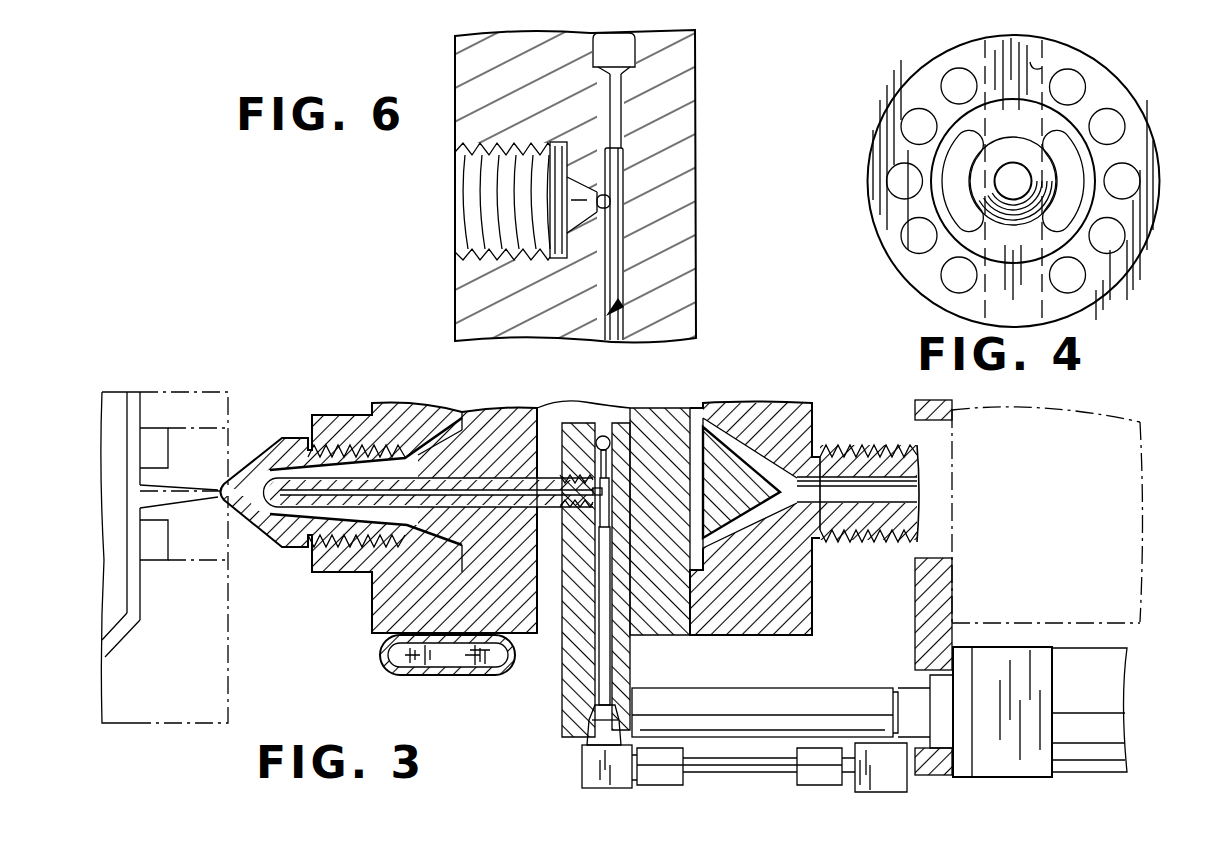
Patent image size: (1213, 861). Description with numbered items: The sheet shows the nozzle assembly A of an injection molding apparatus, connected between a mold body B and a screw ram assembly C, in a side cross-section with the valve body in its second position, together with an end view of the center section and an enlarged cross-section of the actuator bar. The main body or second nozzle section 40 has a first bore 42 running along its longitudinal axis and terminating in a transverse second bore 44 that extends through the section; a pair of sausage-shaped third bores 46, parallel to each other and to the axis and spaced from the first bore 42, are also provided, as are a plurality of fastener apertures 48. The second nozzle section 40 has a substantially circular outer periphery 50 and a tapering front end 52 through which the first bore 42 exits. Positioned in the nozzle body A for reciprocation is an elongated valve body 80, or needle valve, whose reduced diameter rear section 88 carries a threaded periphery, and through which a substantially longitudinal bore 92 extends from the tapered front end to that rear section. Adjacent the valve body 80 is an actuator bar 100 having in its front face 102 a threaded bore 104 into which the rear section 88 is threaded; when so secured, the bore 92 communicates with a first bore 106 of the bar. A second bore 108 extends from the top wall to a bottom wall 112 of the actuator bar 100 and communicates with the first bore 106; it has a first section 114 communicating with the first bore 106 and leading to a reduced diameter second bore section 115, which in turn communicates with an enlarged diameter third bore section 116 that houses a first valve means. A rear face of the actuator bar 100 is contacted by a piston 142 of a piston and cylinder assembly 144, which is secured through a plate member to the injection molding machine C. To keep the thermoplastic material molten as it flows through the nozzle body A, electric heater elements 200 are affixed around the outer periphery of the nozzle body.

In FIG. 4, the second nozzle section 40 is at (876, 118).
In FIG. 4, the first bore 42 is at (1003, 163).
In FIG. 4, the second bore 44 is at (1040, 66).
In FIG. 3, the second bore 44 is at (552, 640).
In FIG. 4, the third bores 46 is at (1080, 173).
In FIG. 4, the fastener apertures 48 is at (1078, 80).
In FIG. 4, the circular outer periphery 50 is at (878, 257).
In FIG. 4, the tapering front end 52 is at (977, 170).
In FIG. 3, the valve body 80 is at (350, 524).
In FIG. 3, the reduced diameter rear section 88 is at (562, 475).
In FIG. 3, the longitudinal bore 92 is at (303, 497).
In FIG. 3, the actuator bar 100 is at (550, 720).
In FIG. 6, the front face 102 is at (458, 300).
In FIG. 3, the front face 102 is at (535, 408).
In FIG. 6, the threaded bore 104 is at (460, 184).
In FIG. 3, the first bore 106 is at (604, 488).
In FIG. 6, the second bore 108 is at (610, 313).
In FIG. 3, the second bore 108 is at (607, 508).
In FIG. 3, the bottom wall 112 is at (582, 742).
In FIG. 6, the first section 114 is at (614, 183).
In FIG. 6, the second bore section 115 is at (615, 103).
In FIG. 6, the third bore section 116 is at (627, 42).
In FIG. 3, the piston 142 is at (713, 708).
In FIG. 3, the piston and cylinder assembly 144 is at (1072, 780).
In FIG. 3, the electric heater elements 200 is at (460, 677).
In FIG. 3, the nozzle assembly A is at (360, 612).
In FIG. 3, the mold body B is at (185, 730).
In FIG. 3, the screw ram assembly C is at (1105, 628).